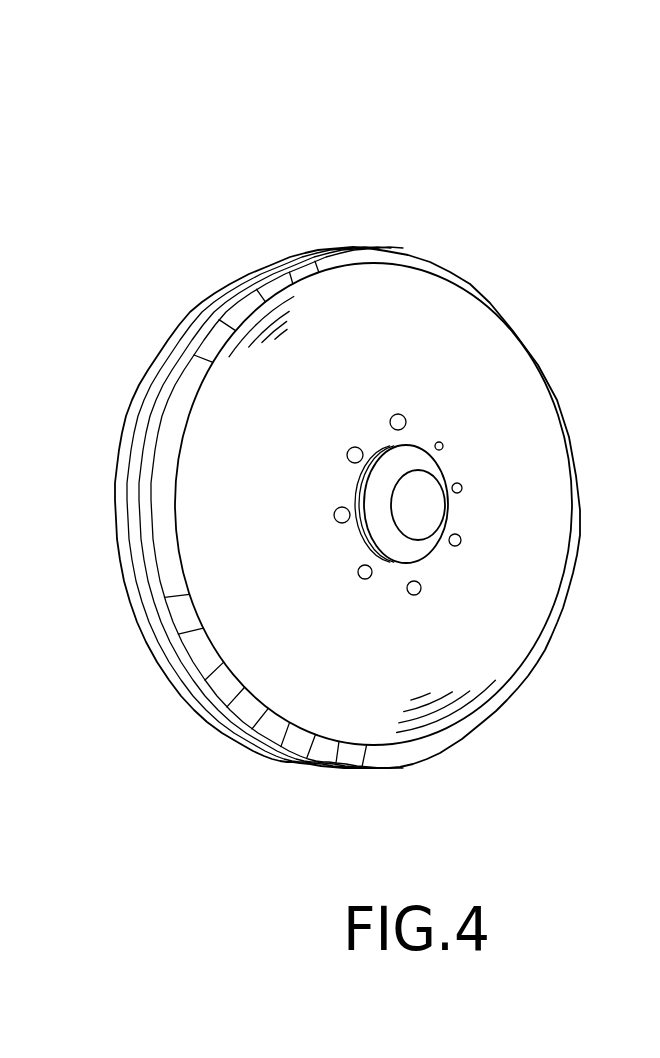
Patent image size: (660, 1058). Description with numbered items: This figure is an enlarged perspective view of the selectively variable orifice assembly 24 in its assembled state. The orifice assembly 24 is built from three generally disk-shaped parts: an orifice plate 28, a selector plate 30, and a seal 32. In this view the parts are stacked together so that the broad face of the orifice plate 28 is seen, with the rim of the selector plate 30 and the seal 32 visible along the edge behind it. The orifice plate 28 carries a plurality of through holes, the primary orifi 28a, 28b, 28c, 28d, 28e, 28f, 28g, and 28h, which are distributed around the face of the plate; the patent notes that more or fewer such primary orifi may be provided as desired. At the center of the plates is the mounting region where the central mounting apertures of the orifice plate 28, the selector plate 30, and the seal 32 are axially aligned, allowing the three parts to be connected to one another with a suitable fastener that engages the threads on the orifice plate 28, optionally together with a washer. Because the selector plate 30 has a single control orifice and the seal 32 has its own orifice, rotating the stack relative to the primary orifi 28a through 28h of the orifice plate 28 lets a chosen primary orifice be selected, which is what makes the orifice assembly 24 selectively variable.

The orifice assembly 24 is at (378, 178).
The orifice plate 28 is at (317, 268).
The selector plate 30 is at (188, 311).
The seal 32 is at (232, 290).
The primary orifice 28a is at (443, 441).
The primary orifice 28b is at (462, 484).
The primary orifice 28c is at (461, 541).
The primary orifice 28d is at (420, 593).
The primary orifice 28e is at (367, 579).
The primary orifice 28f is at (337, 522).
The primary orifice 28g is at (347, 458).
The primary orifice 28h is at (390, 420).